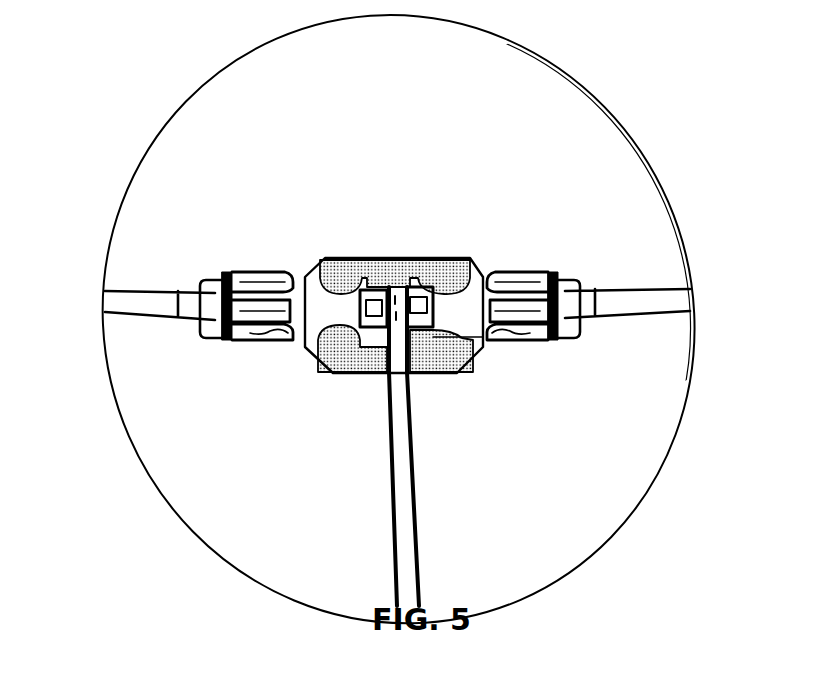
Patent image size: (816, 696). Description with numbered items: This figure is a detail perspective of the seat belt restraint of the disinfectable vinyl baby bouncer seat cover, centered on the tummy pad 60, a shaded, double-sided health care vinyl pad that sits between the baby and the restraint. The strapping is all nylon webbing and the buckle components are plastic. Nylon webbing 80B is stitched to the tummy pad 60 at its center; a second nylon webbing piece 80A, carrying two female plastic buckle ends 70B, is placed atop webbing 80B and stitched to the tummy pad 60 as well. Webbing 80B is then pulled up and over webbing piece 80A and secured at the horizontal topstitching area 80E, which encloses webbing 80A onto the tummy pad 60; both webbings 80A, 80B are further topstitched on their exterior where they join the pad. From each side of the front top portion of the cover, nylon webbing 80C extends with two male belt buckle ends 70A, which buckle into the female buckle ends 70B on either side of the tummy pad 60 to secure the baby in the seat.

The tummy pad 60 is at (420, 262).
The male belt buckle ends 70A is at (245, 259).
The female plastic buckle ends 70B is at (308, 345).
The nylon webbing piece 80A is at (386, 293).
The nylon webbing 80B is at (409, 522).
The nylon webbing 80C is at (105, 300).
The horizontal topstitching area 80E is at (404, 338).